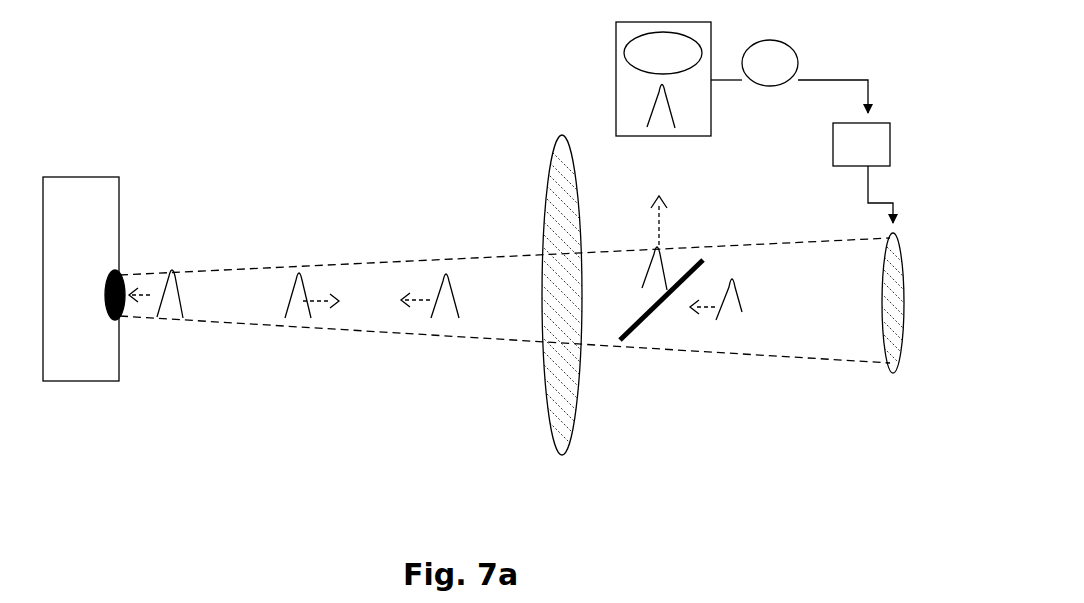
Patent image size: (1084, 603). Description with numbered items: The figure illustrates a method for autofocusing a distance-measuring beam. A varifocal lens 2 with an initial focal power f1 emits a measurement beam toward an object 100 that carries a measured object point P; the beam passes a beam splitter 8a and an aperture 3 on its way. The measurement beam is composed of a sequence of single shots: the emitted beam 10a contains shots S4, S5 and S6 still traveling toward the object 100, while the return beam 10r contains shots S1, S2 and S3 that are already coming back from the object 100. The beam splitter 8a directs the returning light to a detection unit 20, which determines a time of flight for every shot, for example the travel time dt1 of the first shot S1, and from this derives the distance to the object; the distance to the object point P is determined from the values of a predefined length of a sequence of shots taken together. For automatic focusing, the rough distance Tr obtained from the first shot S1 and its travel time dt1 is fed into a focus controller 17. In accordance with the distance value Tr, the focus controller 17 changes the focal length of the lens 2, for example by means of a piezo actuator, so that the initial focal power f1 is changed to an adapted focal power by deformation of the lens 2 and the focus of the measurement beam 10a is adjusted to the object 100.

The object 100 is at (81, 279).
The measured object point P is at (118, 278).
The shot S4 is at (165, 311).
The shot S3 is at (300, 311).
The shot S5 is at (450, 311).
The aperture 3 is at (575, 423).
The beam splitter 8a is at (623, 343).
The shot S2 is at (652, 273).
The return beam 10r is at (664, 216).
The shot S6 is at (742, 312).
The detection unit 20 is at (635, 34).
The time of flight of first shot dt1 is at (663, 53).
The first shot S1 is at (658, 108).
The rough distance Tr is at (754, 63).
The focus controller 17 is at (845, 151).
The varifocal lens 2 is at (895, 275).
The emitted beam 10a is at (794, 257).
The initial focal power f1 is at (892, 272).